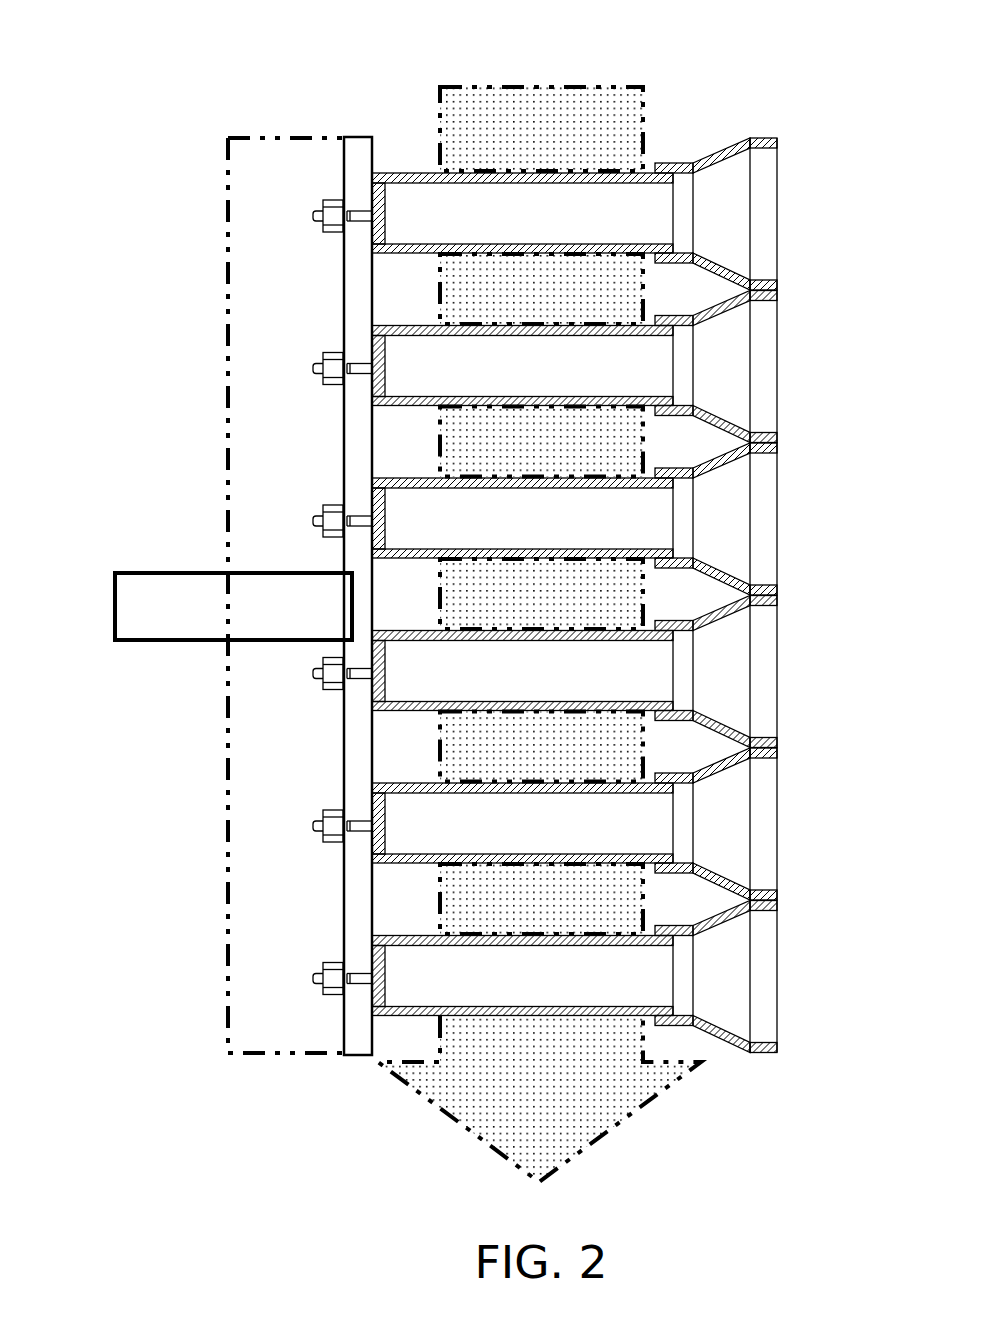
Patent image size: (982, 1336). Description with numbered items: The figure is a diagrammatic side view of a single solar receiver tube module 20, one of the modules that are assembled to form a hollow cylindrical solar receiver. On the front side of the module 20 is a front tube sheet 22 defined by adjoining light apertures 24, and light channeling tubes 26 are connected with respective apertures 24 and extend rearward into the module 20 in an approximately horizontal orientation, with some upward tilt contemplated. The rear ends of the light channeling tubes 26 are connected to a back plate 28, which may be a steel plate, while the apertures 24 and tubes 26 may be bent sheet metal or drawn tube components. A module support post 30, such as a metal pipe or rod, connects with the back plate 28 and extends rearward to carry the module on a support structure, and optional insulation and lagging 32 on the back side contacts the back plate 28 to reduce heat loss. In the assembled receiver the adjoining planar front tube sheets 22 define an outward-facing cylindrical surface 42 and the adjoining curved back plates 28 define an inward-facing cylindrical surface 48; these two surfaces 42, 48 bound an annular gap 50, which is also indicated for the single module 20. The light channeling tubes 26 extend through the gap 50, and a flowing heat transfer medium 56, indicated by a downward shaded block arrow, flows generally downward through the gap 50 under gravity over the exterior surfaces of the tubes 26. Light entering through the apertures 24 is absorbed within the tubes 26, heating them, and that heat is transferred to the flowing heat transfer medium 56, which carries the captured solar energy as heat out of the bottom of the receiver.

The solar receiver tube module 20 is at (210, 294).
The front tube sheet 22 is at (762, 633).
The light aperture 24 is at (708, 223).
The light channeling tube 26 is at (520, 223).
The back plate 28 is at (358, 1027).
The module support post 30 is at (183, 612).
The insulation and lagging 32 is at (272, 423).
The outward-facing cylindrical surface 42 is at (781, 796).
The inward-facing cylindrical surface 48 is at (378, 920).
The annular gap 50 is at (377, 115).
The flowing heat transfer medium 56 is at (497, 1105).